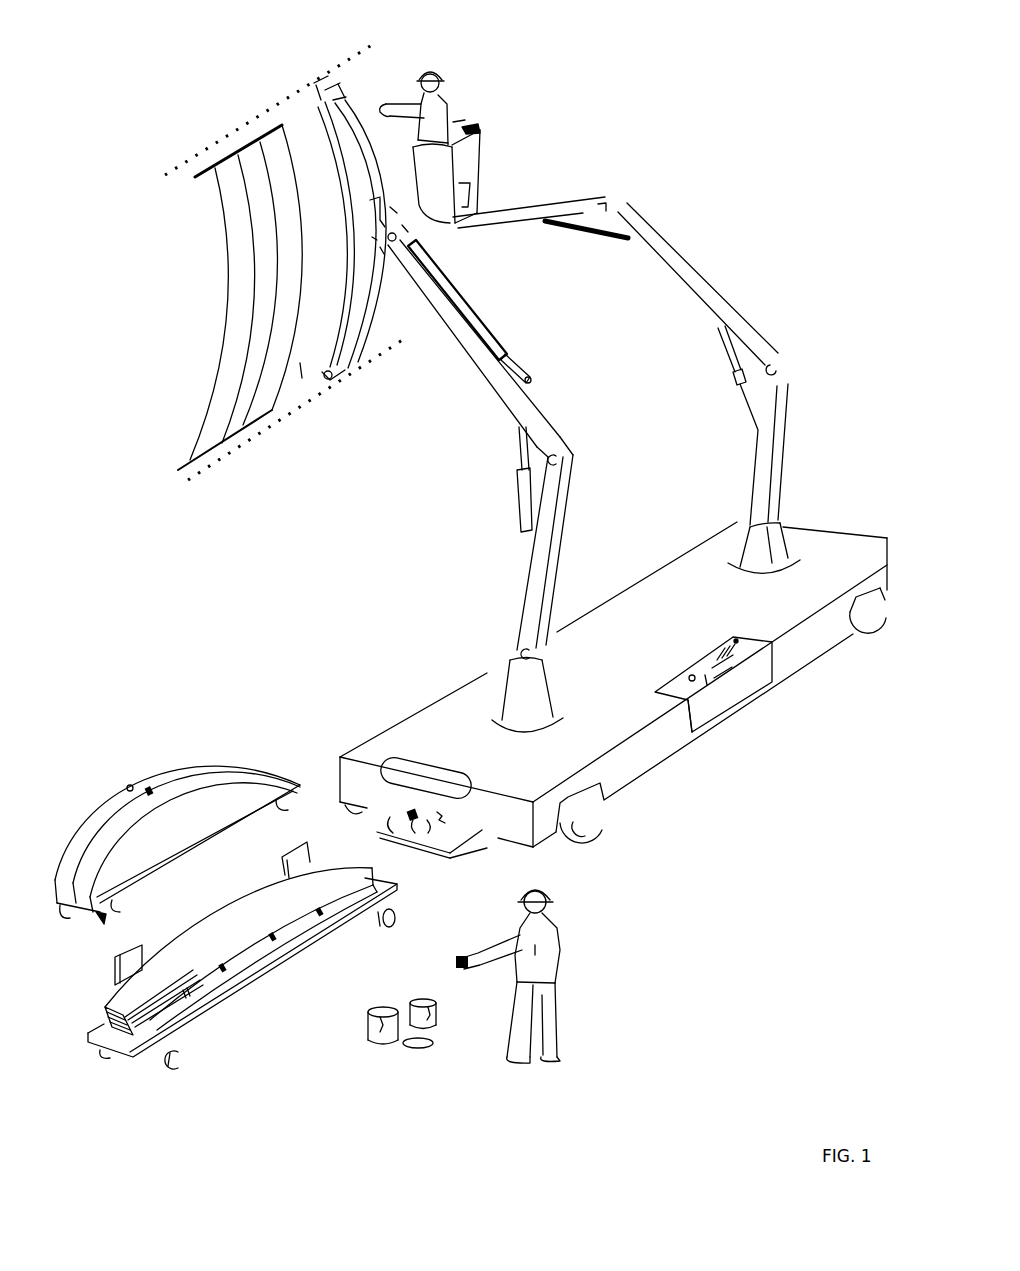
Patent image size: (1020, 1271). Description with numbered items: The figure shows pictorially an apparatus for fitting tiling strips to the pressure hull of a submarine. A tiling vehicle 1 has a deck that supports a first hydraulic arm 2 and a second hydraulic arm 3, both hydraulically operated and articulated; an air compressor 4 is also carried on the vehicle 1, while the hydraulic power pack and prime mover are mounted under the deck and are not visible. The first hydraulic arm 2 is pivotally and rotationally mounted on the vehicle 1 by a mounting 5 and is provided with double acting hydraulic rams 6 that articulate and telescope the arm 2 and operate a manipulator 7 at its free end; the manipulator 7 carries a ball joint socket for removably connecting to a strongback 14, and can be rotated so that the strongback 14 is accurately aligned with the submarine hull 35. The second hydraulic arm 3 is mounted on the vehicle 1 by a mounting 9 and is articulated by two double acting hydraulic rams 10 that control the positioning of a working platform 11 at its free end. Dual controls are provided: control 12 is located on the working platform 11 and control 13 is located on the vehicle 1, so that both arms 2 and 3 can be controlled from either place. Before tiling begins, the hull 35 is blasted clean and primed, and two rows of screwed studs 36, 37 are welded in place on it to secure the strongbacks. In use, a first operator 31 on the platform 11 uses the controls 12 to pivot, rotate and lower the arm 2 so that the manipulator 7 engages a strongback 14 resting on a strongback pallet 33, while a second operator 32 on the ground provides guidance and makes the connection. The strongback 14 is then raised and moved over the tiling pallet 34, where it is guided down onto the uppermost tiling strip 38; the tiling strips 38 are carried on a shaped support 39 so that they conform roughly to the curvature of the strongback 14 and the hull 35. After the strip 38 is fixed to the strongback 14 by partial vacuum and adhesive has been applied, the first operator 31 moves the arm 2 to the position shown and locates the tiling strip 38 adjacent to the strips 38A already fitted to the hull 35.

The tiling vehicle 1 is at (607, 727).
The first hydraulic arm 2 is at (535, 570).
The second hydraulic arm 3 is at (783, 428).
The air compressor 4 is at (380, 767).
The mounting 5 is at (512, 655).
The double acting hydraulic rams 6 is at (498, 363).
The manipulator 7 is at (383, 195).
The mounting 9 is at (752, 522).
The double acting hydraulic rams 10 is at (615, 291).
The working platform 11 is at (468, 168).
The control 12 is at (480, 127).
The control 13 is at (735, 650).
The strongback 14 is at (355, 343).
The first operator 31 is at (437, 112).
The second operator 32 is at (545, 948).
The strongback pallet 33 is at (175, 803).
The tiling pallet 34 is at (232, 1003).
The submarine hull 35 is at (300, 363).
The screwed studs 36 is at (265, 109).
The screwed studs 37 is at (292, 427).
The tiling strip 38 is at (323, 872).
The fitted tiling strips 38A is at (246, 307).
The shaped support 39 is at (248, 955).